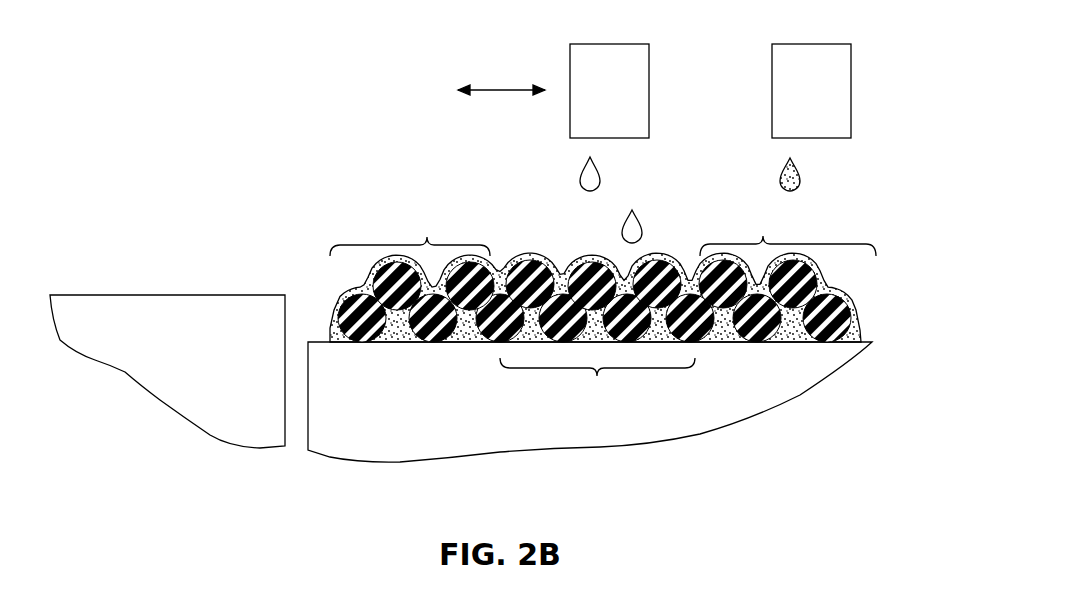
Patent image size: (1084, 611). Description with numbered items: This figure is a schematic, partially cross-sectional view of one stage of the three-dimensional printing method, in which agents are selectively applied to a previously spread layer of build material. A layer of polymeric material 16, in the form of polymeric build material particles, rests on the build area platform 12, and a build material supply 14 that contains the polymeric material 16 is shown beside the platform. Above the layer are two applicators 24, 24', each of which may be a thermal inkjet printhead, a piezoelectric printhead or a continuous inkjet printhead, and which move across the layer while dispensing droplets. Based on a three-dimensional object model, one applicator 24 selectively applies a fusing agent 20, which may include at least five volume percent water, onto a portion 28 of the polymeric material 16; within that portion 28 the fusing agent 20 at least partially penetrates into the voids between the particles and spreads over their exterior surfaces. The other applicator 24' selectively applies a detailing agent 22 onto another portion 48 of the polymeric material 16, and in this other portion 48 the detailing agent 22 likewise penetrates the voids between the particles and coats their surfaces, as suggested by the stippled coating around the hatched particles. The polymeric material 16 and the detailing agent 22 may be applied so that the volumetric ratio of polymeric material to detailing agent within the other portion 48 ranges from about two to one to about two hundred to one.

The build area platform 12 is at (780, 375).
The build material supply 14 is at (116, 323).
The polymeric material 16 is at (538, 258).
The fusing agent 20 is at (578, 180).
The detailing agent 22 is at (348, 292).
The applicator 24 is at (586, 91).
The applicator 24' is at (846, 91).
The portion 28 is at (597, 381).
The other portion 48 is at (603, 233).